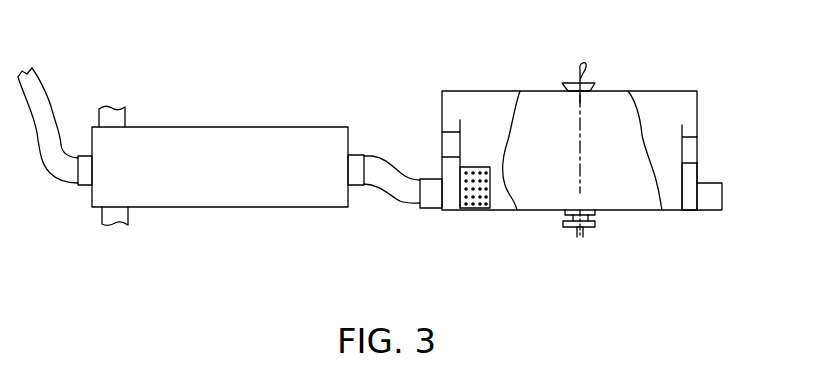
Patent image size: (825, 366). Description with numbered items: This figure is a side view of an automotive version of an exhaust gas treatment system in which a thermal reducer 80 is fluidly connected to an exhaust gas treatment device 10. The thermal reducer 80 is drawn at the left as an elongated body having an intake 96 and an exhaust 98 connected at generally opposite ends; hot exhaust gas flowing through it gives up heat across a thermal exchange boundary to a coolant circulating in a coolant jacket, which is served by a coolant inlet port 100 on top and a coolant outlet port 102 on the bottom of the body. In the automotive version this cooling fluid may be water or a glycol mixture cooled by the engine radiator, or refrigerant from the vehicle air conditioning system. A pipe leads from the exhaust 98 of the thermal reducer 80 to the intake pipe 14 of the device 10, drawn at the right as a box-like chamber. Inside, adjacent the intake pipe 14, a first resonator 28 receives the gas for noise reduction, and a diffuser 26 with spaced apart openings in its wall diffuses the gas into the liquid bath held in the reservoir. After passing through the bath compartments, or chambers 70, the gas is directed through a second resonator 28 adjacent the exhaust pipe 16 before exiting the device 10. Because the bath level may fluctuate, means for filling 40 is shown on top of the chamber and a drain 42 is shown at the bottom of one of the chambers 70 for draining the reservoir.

The device 10 is at (647, 74).
The intake pipe 14 is at (432, 190).
The exhaust pipe 16 is at (708, 185).
The diffuser 26 is at (472, 197).
The resonator 28 is at (443, 142).
The means for filling 40 is at (572, 75).
The drain 42 is at (590, 227).
The chambers 70 is at (688, 200).
The thermal reducer 80 is at (238, 127).
The intake 96 is at (82, 187).
The exhaust 98 is at (357, 188).
The coolant inlet port 100 is at (125, 110).
The coolant outlet port 102 is at (128, 211).